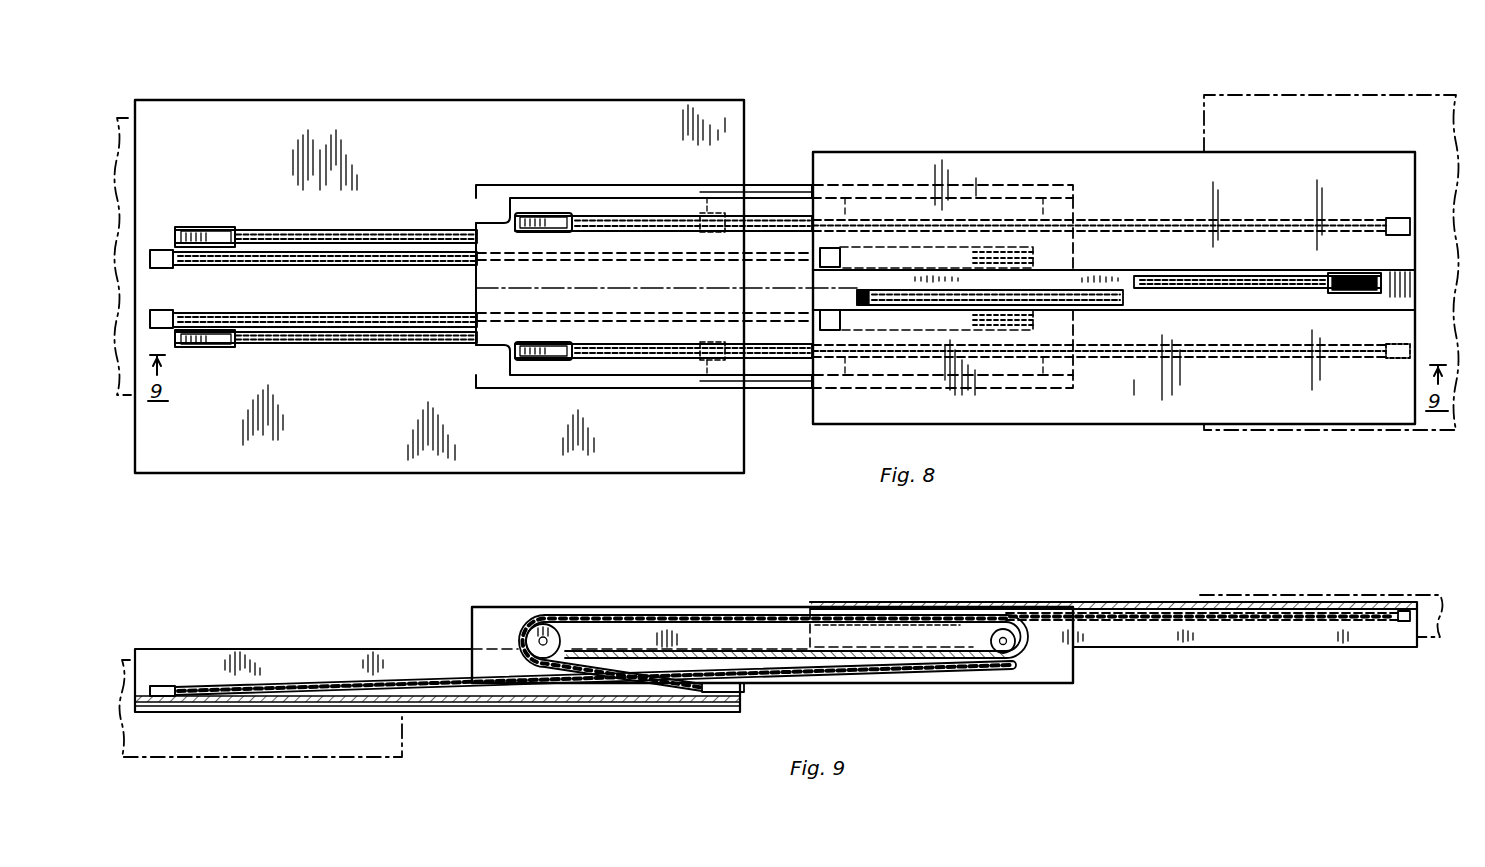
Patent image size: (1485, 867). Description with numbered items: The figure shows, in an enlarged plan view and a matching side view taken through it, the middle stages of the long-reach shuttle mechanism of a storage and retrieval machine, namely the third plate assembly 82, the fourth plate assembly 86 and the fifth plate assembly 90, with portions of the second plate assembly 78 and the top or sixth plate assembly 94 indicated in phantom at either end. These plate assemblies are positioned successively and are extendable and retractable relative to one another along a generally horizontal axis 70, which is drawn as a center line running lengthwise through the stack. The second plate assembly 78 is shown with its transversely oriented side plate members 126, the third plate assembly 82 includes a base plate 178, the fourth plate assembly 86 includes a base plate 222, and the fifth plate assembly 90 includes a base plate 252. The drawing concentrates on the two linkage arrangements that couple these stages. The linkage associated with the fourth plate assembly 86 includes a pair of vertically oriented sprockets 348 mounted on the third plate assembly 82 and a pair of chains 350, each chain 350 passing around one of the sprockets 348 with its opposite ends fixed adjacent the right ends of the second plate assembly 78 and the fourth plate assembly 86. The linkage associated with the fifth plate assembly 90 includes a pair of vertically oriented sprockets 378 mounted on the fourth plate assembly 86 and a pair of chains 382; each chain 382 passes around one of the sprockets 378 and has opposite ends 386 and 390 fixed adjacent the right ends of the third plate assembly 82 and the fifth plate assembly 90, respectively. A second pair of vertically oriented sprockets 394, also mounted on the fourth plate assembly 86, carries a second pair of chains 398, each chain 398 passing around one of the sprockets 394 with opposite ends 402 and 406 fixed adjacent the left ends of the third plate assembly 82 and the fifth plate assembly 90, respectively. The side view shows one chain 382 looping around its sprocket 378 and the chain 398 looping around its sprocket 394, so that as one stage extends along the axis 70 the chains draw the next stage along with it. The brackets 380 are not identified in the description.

In FIG. 8, the horizontal axis 70 is at (476, 288).
In FIG. 8, the second plate assembly 78 is at (122, 114).
In FIG. 9, the second plate assembly 78 is at (240, 756).
In FIG. 8, the third plate assembly 82 is at (466, 124).
In FIG. 9, the third plate assembly 82 is at (323, 649).
In FIG. 8, the fourth plate assembly 86 is at (789, 186).
In FIG. 9, the fourth plate assembly 86 is at (498, 607).
In FIG. 8, the fifth plate assembly 90 is at (975, 153).
In FIG. 9, the fifth plate assembly 90 is at (1269, 646).
In FIG. 8, the sixth plate assembly 94 is at (1306, 477).
In FIG. 9, the sixth plate assembly 94 is at (1445, 584).
In FIG. 8, the side plate members 126 is at (510, 185).
In FIG. 9, the base plate 178 is at (578, 701).
In FIG. 8, the base plate 222 is at (478, 300).
In FIG. 8, the base plate 252 is at (1136, 382).
In FIG. 8, the sprockets 348 is at (222, 228).
In FIG. 8, the chains 350 is at (398, 222).
In FIG. 8, the sprockets 378 is at (552, 214).
In FIG. 9, the sprockets 378 is at (549, 624).
In FIG. 8, the hidden bracket 380 is at (708, 231).
In FIG. 8, the chains 382 is at (616, 217).
In FIG. 9, the chains 382 is at (626, 614).
In FIG. 9, the chain end 386 is at (748, 688).
In FIG. 8, the chain end 390 is at (1393, 218).
In FIG. 9, the chain end 390 is at (1406, 619).
In FIG. 8, the sprockets 394 is at (1035, 254).
In FIG. 9, the sprockets 394 is at (1013, 626).
In FIG. 8, the chains 398 is at (283, 313).
In FIG. 9, the chains 398 is at (312, 680).
In FIG. 8, the chain end 402 is at (165, 312).
In FIG. 9, the chain end 402 is at (169, 686).
In FIG. 8, the chain end 406 is at (845, 253).
In FIG. 9, the chain end 406 is at (832, 612).